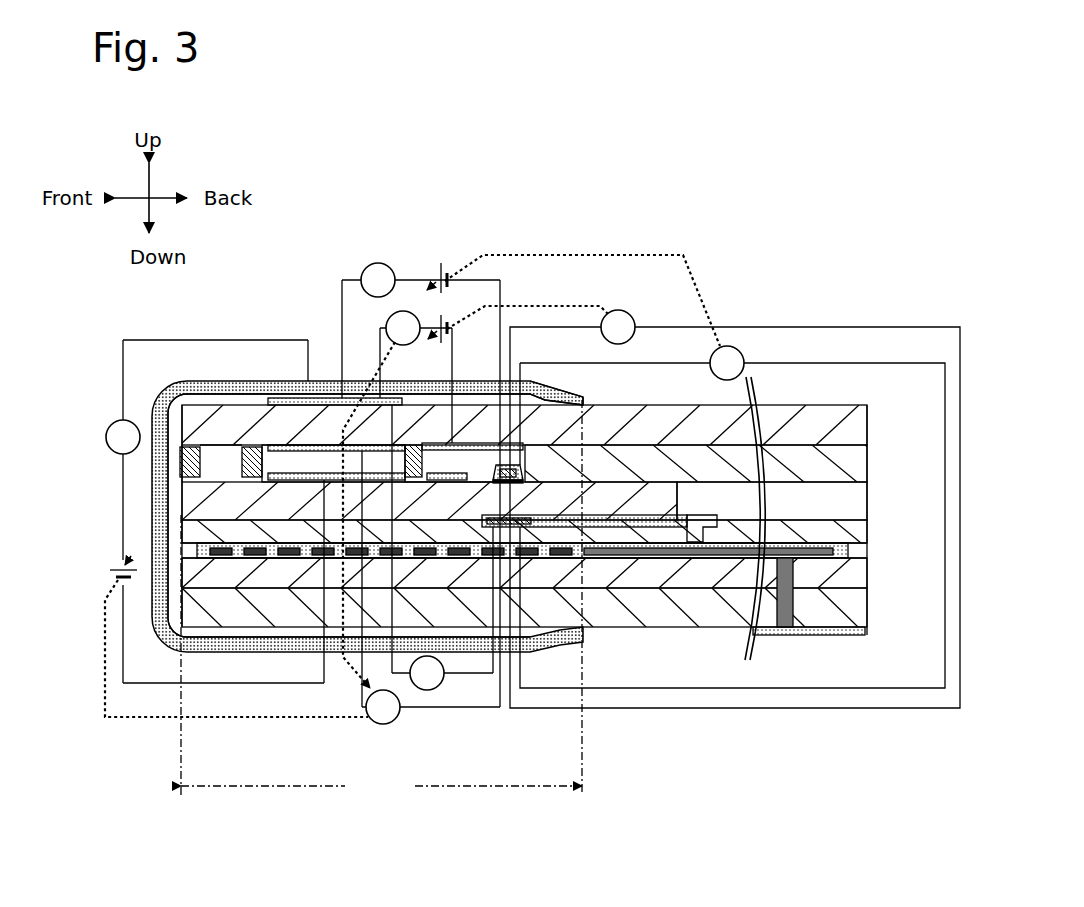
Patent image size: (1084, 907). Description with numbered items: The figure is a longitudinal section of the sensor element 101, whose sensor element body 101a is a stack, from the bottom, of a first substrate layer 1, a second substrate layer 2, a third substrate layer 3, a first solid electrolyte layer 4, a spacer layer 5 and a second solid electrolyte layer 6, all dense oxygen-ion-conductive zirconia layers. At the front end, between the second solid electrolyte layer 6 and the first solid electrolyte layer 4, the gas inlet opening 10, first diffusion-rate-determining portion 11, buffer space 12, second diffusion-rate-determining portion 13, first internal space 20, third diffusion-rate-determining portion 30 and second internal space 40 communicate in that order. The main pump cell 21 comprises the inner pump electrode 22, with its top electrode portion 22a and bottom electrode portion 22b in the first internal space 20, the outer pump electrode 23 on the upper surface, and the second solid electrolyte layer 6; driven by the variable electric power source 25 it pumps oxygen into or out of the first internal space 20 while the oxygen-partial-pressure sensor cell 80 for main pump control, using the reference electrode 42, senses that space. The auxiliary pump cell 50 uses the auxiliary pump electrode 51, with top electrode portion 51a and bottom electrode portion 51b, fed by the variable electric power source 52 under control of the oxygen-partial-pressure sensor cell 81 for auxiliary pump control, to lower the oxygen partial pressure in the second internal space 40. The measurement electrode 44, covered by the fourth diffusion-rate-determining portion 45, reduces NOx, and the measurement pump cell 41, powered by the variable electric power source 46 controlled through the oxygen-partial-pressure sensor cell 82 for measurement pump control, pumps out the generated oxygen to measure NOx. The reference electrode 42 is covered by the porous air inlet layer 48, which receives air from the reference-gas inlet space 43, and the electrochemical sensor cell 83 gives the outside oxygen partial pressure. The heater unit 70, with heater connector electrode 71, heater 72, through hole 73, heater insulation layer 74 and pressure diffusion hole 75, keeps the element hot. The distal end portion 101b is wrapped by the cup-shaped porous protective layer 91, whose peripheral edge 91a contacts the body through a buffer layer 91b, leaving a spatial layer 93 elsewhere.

The first substrate layer 1 is at (867, 607).
The second substrate layer 2 is at (867, 572).
The third substrate layer 3 is at (867, 538).
The first solid electrolyte layer 4 is at (182, 495).
The spacer layer 5 is at (867, 448).
The second solid electrolyte layer 6 is at (867, 424).
The gas inlet opening 10 is at (182, 462).
The first diffusion-rate-determining portion 11 is at (193, 447).
The buffer space 12 is at (232, 448).
The second diffusion-rate-determining portion 13 is at (250, 452).
The first internal space 20 is at (368, 462).
The main pump cell 21 is at (214, 337).
The inner pump electrode 22 is at (312, 398).
The top electrode portion 22a is at (346, 445).
The bottom electrode portion 22b is at (322, 476).
The outer pump electrode 23 is at (286, 398).
The variable electric power source 25 is at (110, 571).
The third diffusion-rate-determining portion 30 is at (412, 447).
The second internal space 40 is at (425, 445).
The measurement pump cell 41 is at (364, 270).
The reference electrode 42 is at (528, 516).
The reference-gas inlet space 43 is at (860, 505).
The measurement electrode 44 is at (508, 484).
The fourth diffusion-rate-determining portion 45 is at (496, 468).
The variable electric power source 46 is at (441, 263).
The air inlet layer 48 is at (682, 518).
The auxiliary pump cell 50 is at (384, 325).
The auxiliary pump electrode 51 is at (462, 443).
The top electrode portion 51a is at (518, 443).
The bottom electrode portion 51b is at (446, 481).
The variable electric power source 52 is at (440, 343).
The heater unit 70 is at (898, 553).
The heater connector electrode 71 is at (867, 631).
The heater 72 is at (226, 552).
The through hole 73 is at (790, 608).
The heater insulation layer 74 is at (205, 548).
The pressure diffusion hole 75 is at (714, 517).
The oxygen-partial-pressure sensor cell for main pump control 80 is at (426, 715).
The oxygen-partial-pressure sensor cell for auxiliary pump control 81 is at (780, 326).
The oxygen-partial-pressure sensor cell for measurement pump control 82 is at (785, 364).
The electrochemical sensor cell 83 is at (452, 683).
The porous protective layer 91 is at (152, 385).
The peripheral edge 91a is at (565, 390).
The buffer layer 91b is at (582, 399).
The spatial layer 93 is at (188, 392).
The sensor element 101 is at (772, 228).
The sensor element body 101a is at (850, 372).
The distal end portion 101b is at (381, 598).